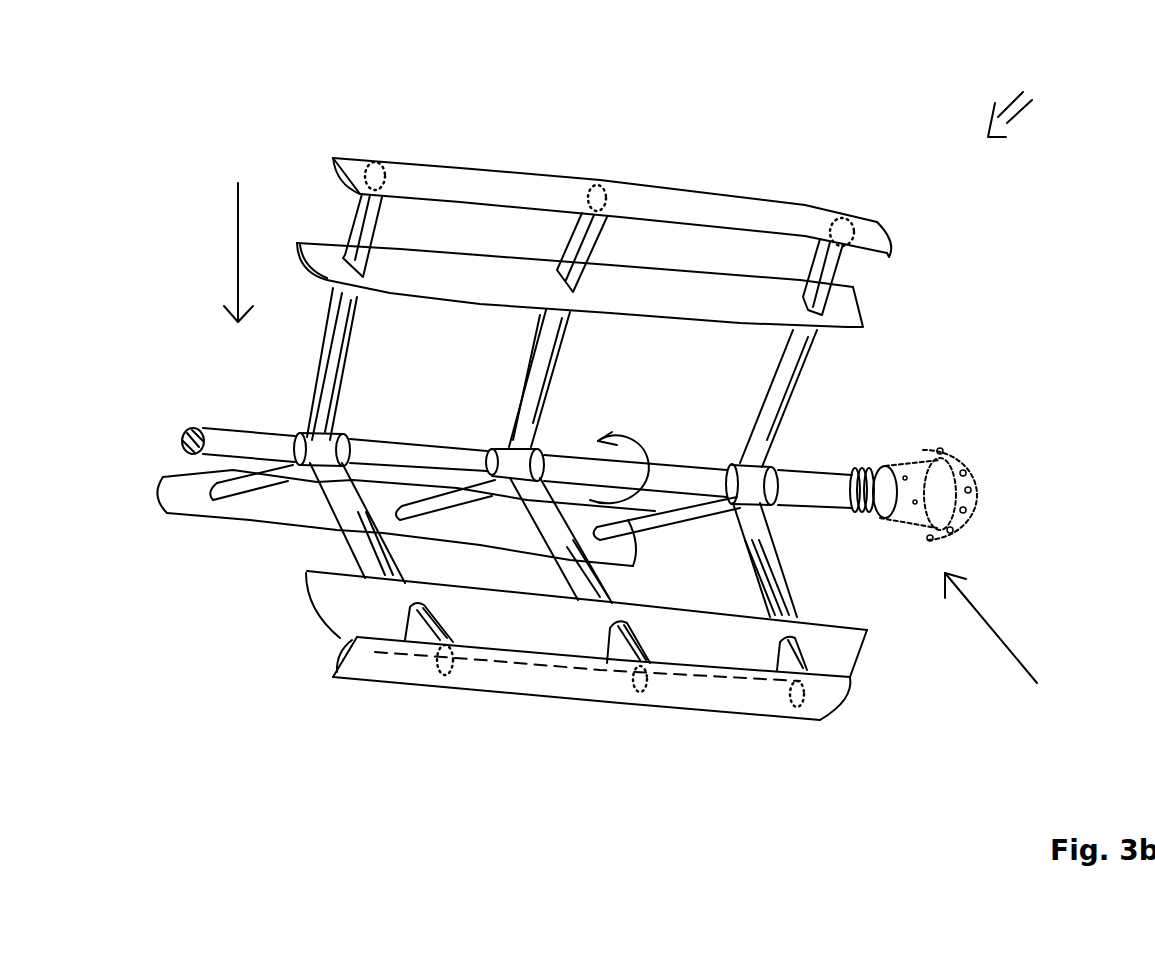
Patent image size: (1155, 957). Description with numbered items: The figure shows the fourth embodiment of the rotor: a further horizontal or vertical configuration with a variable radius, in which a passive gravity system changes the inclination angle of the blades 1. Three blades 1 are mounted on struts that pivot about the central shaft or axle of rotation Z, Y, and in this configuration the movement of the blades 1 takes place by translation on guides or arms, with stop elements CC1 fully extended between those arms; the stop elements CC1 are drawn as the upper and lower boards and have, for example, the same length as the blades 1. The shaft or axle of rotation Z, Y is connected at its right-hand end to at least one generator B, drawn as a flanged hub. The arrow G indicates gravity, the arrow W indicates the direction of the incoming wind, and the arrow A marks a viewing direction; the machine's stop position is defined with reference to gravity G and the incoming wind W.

The stop element CC1 is at (773, 217).
The blade 1 is at (843, 307).
The shaft or axle of rotation Y is at (810, 487).
The shaft or axle of rotation Z is at (574, 438).
The generator B is at (930, 487).
The gravity G is at (224, 252).
The viewing direction A is at (1062, 79).
The direction of the incoming wind W is at (1002, 628).